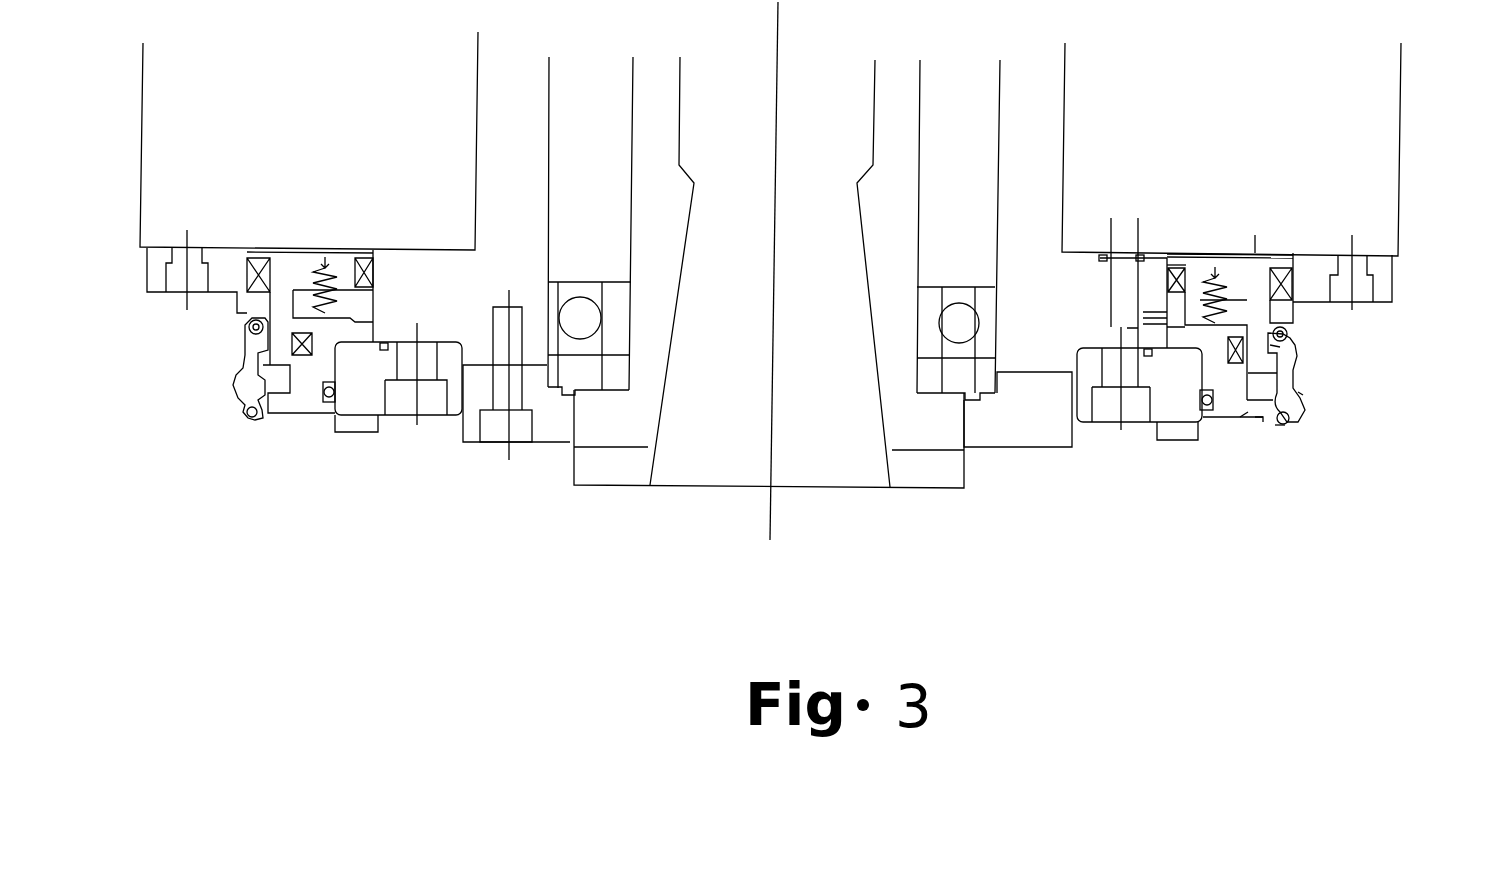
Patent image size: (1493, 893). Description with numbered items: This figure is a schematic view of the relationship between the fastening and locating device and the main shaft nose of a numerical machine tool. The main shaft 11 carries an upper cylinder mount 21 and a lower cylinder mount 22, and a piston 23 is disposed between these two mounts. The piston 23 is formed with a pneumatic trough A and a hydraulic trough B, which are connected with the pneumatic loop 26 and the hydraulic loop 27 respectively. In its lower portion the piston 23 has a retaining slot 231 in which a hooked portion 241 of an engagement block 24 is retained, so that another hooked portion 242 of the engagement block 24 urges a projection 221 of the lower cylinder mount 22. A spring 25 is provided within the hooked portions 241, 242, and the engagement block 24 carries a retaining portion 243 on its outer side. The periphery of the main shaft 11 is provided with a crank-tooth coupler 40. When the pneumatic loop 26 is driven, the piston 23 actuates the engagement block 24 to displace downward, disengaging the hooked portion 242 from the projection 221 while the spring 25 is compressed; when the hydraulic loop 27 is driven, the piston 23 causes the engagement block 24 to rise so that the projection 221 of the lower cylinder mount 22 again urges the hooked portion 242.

The main shaft 11 is at (935, 480).
The upper cylinder mount 21 is at (1385, 281).
The lower cylinder mount 22 is at (1219, 417).
The projection 221 is at (1263, 422).
The piston 23 is at (1245, 283).
The retaining slot 231 is at (1245, 412).
The engagement block 24 is at (1293, 366).
The hooked portion 241 is at (1280, 347).
The hooked portion 242 is at (1280, 428).
The retaining portion 243 is at (1303, 395).
The spring 25 is at (1288, 335).
The pneumatic loop 26 is at (1245, 242).
The hydraulic loop 27 is at (1112, 332).
The crank-tooth coupler 40 is at (1170, 417).
The pneumatic trough A is at (1280, 253).
The hydraulic trough B is at (1183, 260).